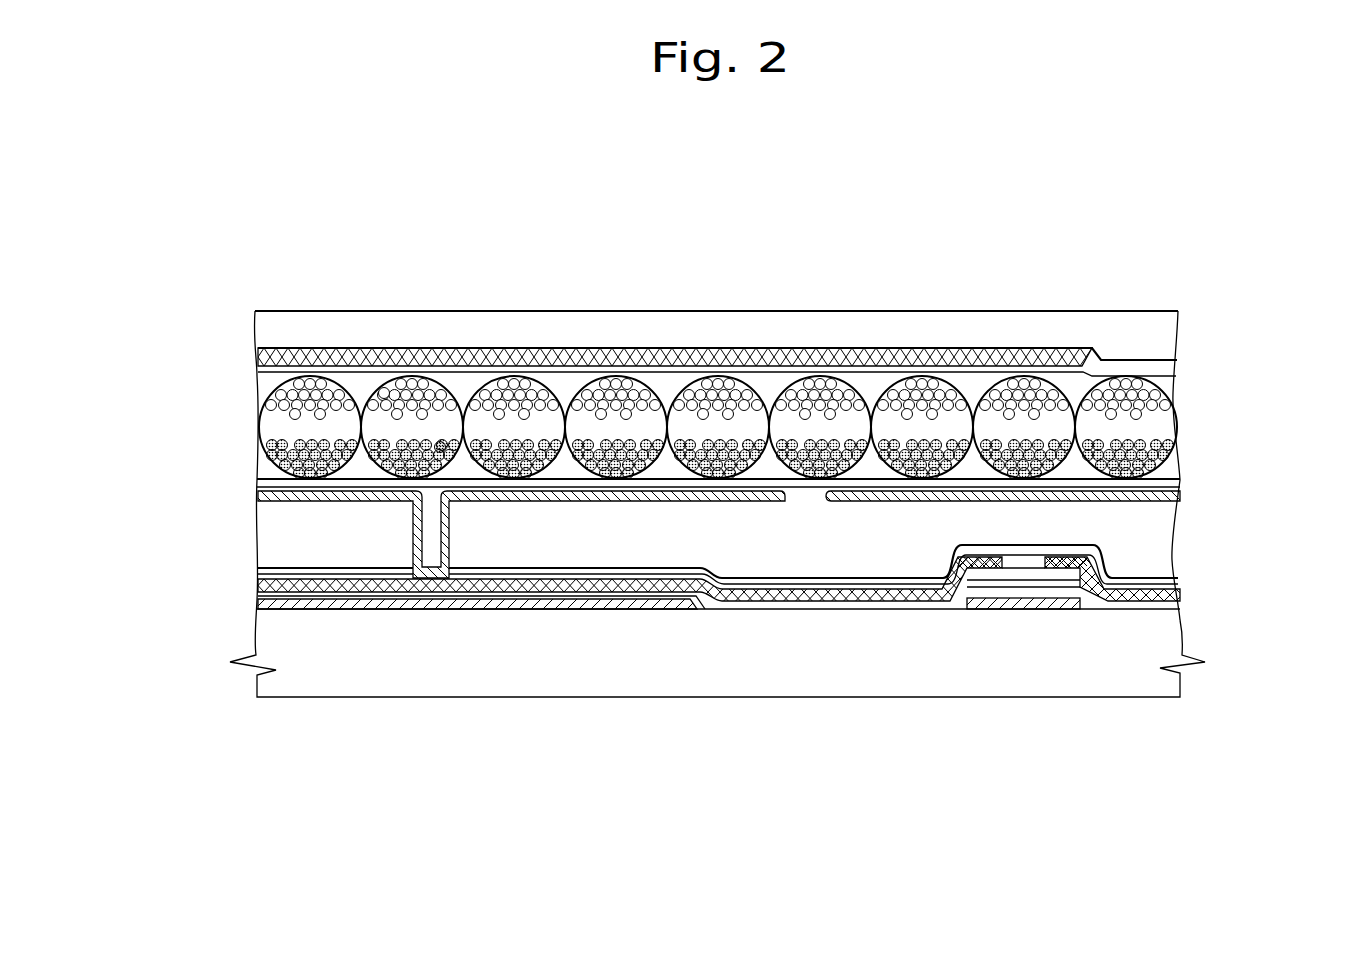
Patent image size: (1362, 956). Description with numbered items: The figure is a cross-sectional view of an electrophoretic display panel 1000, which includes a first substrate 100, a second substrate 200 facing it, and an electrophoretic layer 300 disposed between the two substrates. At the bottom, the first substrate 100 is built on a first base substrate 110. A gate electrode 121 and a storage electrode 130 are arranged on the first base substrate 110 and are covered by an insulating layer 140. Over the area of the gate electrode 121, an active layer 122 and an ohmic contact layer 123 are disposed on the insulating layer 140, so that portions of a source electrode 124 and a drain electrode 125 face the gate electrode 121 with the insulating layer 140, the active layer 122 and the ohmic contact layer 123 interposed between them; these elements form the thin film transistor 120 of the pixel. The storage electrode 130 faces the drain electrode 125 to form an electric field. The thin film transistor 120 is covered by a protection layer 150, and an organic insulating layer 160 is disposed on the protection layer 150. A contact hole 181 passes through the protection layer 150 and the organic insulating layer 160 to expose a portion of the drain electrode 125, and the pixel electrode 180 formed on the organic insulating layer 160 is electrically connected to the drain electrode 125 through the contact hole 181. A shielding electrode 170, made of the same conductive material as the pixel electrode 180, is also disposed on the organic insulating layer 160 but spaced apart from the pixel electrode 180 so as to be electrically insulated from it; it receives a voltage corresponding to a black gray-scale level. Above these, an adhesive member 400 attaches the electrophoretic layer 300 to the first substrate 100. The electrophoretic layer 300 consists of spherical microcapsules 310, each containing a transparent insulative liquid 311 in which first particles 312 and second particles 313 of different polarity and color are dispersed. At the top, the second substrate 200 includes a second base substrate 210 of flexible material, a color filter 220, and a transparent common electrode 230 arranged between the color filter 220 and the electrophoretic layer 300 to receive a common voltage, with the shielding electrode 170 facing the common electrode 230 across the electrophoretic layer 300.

The electrophoretic display panel 1000 is at (1159, 211).
The first substrate 100 is at (1278, 492).
The first base substrate 110 is at (1168, 641).
The thin film transistor 120 is at (877, 743).
The gate electrode 121 is at (1050, 600).
The active layer 122 is at (1020, 583).
The ohmic contact layer 123 is at (983, 570).
The source electrode 124 is at (1130, 601).
The drain electrode 125 is at (897, 601).
The storage electrode 130 is at (522, 612).
The insulating layer 140 is at (1168, 606).
The protection layer 150 is at (1168, 583).
The organic insulating layer 160 is at (1168, 535).
The shielding electrode 170 is at (1167, 493).
The pixel electrode 180 is at (262, 496).
The contact hole 181 is at (433, 535).
The second substrate 200 is at (157, 308).
The second base substrate 210 is at (267, 318).
The color filter 220 is at (262, 357).
The common electrode 230 is at (262, 375).
The electrophoretic layer 300 is at (1170, 374).
The microcapsule 310 is at (355, 263).
The transparent insulative liquid 311 is at (408, 425).
The first particles 312 is at (384, 388).
The second particles 313 is at (438, 443).
The adhesive member 400 is at (1170, 484).